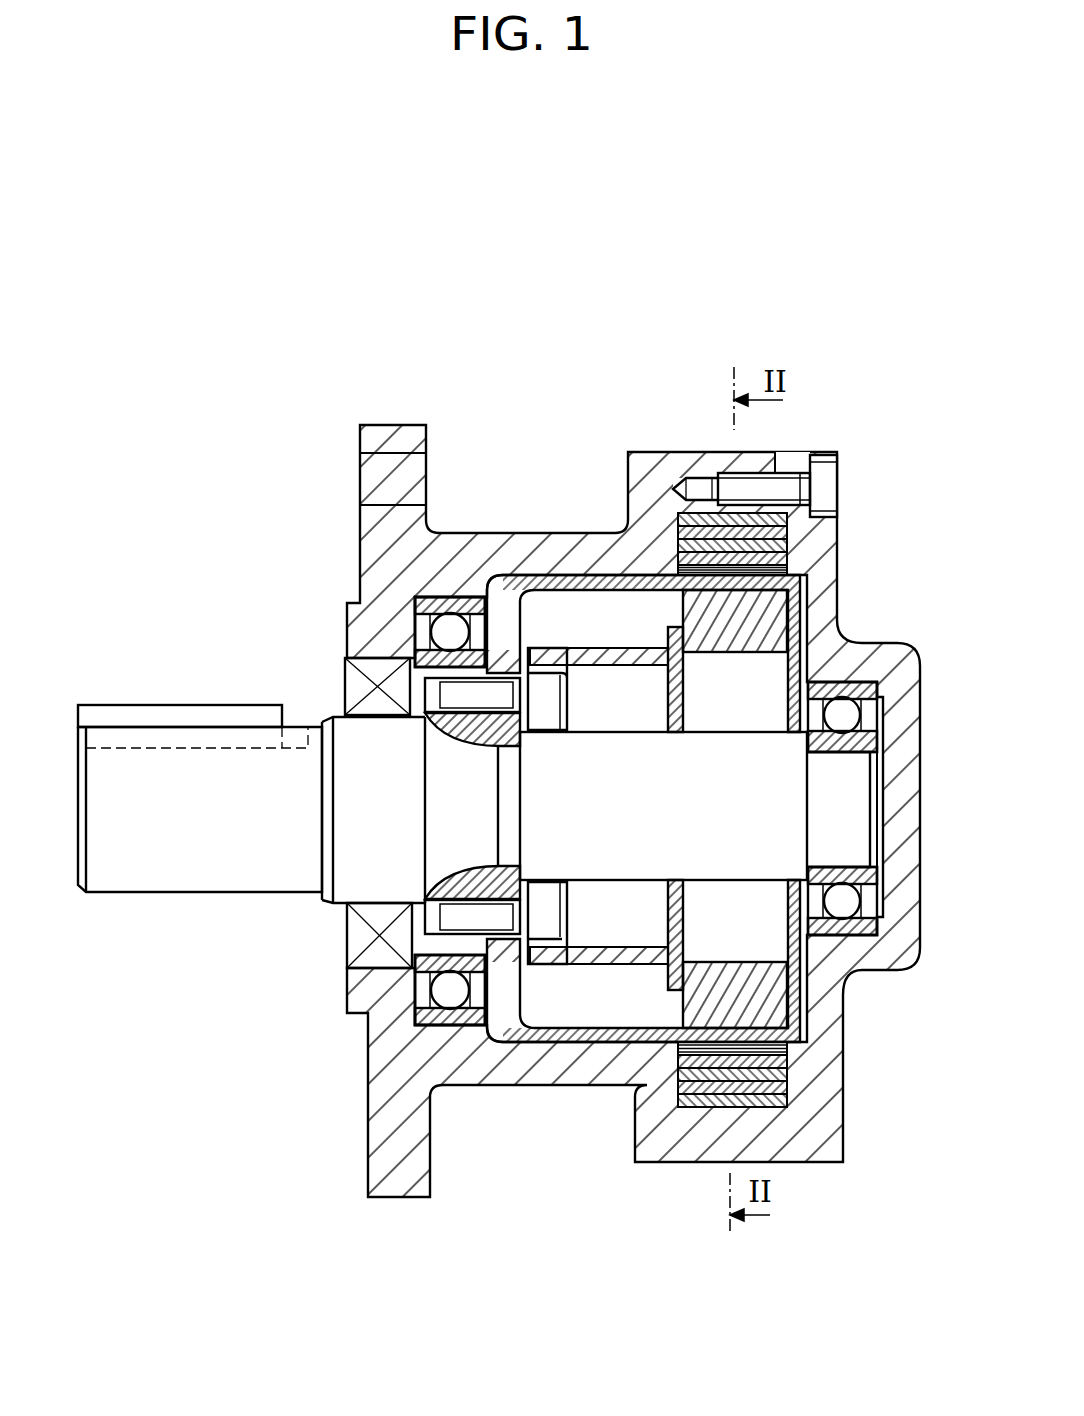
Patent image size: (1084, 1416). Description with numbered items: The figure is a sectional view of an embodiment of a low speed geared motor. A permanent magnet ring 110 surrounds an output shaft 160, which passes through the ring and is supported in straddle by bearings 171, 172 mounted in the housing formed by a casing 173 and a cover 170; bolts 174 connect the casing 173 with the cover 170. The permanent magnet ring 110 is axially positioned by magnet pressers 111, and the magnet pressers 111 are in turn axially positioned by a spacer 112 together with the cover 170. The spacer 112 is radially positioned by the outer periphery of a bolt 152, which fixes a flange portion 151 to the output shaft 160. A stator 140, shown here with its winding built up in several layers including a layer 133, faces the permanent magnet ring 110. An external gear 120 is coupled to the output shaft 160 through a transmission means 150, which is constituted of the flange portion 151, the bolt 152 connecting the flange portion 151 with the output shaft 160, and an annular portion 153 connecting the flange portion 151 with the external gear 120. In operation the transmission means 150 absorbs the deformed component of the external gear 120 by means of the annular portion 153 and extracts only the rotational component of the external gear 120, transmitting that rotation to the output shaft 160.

The permanent magnet ring 110 is at (687, 843).
The magnet pressers 111 is at (687, 687).
The spacer 112 is at (587, 667).
The external gear 120 is at (727, 1035).
The coil layer 133 is at (698, 1107).
The stator 140 is at (758, 692).
The transmission means 150 is at (341, 621).
The flange portion 151 is at (497, 590).
The bolt 152 is at (540, 687).
The annular portion 153 is at (507, 648).
The output shaft 160 is at (143, 872).
The cover 170 is at (812, 1140).
The bearing 171 is at (457, 990).
The bearing 172 is at (860, 940).
The casing 173 is at (385, 1180).
The bolts 174 is at (820, 490).